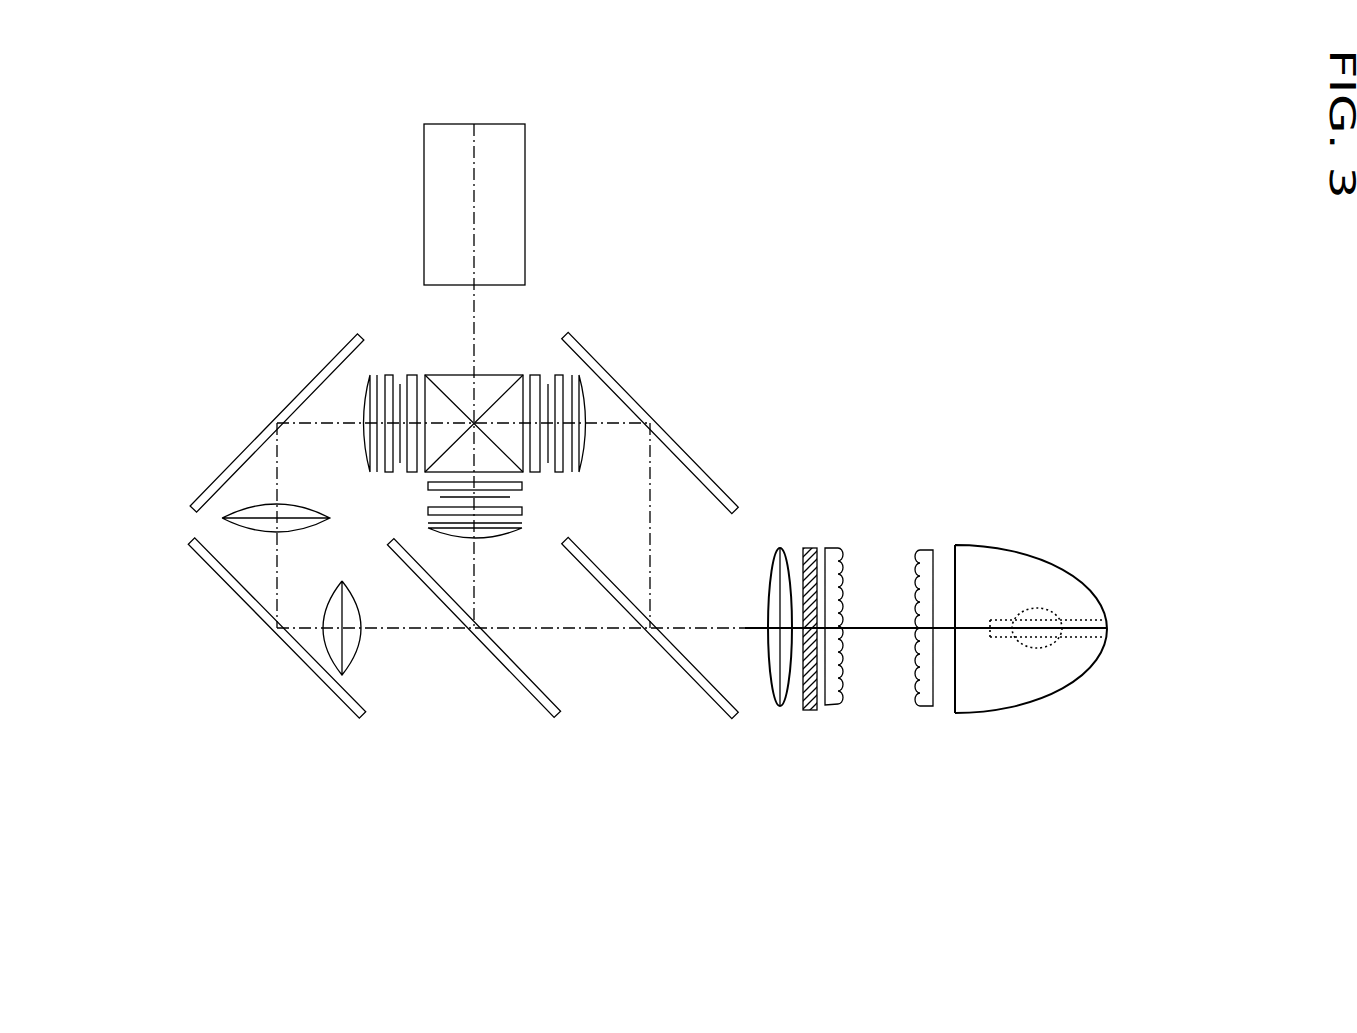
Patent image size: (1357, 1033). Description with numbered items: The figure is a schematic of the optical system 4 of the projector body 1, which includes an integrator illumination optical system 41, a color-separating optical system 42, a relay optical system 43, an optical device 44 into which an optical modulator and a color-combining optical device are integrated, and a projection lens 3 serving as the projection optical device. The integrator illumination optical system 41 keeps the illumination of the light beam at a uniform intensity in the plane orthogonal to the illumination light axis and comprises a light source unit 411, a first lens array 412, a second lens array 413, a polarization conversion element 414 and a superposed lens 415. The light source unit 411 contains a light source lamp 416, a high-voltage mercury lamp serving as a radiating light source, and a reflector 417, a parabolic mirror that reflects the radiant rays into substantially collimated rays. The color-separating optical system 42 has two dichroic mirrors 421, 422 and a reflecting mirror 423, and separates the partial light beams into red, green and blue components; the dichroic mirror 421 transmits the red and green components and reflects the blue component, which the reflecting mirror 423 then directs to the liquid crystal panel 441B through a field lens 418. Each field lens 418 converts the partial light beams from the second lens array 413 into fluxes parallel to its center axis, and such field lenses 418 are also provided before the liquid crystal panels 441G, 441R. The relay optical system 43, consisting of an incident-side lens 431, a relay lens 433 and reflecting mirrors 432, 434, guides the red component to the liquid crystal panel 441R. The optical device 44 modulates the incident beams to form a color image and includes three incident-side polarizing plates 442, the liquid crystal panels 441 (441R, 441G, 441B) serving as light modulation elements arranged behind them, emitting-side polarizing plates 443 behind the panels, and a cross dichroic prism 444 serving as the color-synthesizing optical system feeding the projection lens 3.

The projector body 1 is at (870, 295).
The projection lens 3 is at (424, 172).
The optical system 4 is at (172, 202).
The integrator illumination optical system 41 is at (1034, 503).
The light source unit 411 is at (1081, 651).
The first lens array 412 is at (931, 708).
The second lens array 413 is at (832, 708).
The polarization conversion element 414 is at (809, 711).
The superposed lens 415 is at (779, 565).
The light source lamp 416 is at (1080, 640).
The reflector 417 is at (1068, 683).
The field lens 418 is at (368, 472).
The color-separating optical system 42 is at (582, 765).
The dichroic mirror 421 is at (703, 704).
The dichroic mirror 422 is at (530, 704).
The reflecting mirror 423 is at (701, 458).
The relay optical system 43 is at (160, 390).
The incident-side lens 431 is at (361, 652).
The reflecting mirror 432 is at (326, 690).
The relay lens 433 is at (222, 519).
The reflecting mirror 434 is at (222, 462).
The optical device 44 is at (392, 256).
The liquid crystal panel 441 is at (466, 371).
The liquid crystal panel for red light component 441R is at (401, 374).
The liquid crystal panel for green light component 441G is at (440, 497).
The liquid crystal panel for blue light component 441B is at (548, 374).
The incident-side polarizing plate 442 is at (389, 374).
The emitting-side polarizing plate 443 is at (412, 374).
The cross dichroic prism 444 is at (463, 375).